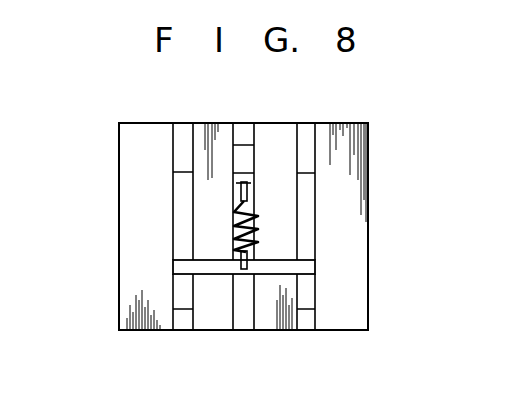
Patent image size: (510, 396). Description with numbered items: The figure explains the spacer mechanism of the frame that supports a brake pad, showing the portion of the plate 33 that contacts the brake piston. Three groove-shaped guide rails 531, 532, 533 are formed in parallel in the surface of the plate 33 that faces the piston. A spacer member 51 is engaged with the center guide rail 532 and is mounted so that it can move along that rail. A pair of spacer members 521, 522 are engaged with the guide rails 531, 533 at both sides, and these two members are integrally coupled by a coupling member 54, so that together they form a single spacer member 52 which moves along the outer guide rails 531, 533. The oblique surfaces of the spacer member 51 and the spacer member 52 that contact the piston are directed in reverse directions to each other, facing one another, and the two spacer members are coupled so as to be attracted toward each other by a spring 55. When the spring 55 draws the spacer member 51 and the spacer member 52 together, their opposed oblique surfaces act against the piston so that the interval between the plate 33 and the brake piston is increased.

The plate 33 is at (368, 170).
The spacer member 51 is at (246, 154).
The spacer member 52 is at (170, 262).
The spacer member 521 is at (180, 237).
The spacer member 522 is at (308, 237).
The guide rail 531 is at (183, 133).
The guide rail 532 is at (238, 133).
The guide rail 533 is at (300, 133).
The coupling member 54 is at (273, 268).
The spring 55 is at (237, 250).